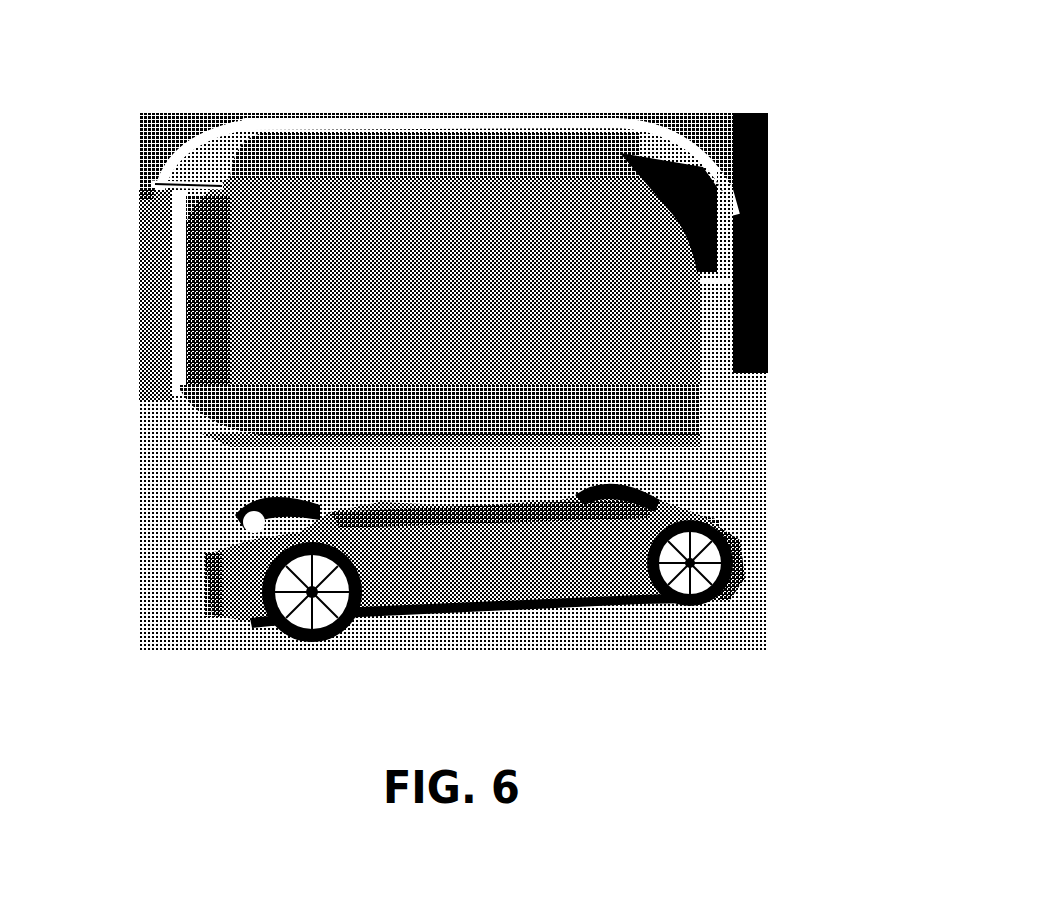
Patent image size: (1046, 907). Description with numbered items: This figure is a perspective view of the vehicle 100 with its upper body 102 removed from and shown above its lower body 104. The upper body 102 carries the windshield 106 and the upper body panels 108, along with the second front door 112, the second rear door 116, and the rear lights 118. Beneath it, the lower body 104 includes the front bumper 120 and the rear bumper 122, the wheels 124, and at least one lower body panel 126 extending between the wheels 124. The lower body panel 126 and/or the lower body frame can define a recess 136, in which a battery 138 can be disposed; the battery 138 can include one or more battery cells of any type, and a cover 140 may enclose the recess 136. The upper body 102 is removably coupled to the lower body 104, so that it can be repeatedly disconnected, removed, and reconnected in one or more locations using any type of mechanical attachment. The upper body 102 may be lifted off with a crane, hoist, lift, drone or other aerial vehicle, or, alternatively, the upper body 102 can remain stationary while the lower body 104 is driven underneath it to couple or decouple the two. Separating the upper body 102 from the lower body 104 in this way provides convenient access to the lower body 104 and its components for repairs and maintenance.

The vehicle 100 is at (207, 72).
The upper body 102 is at (337, 148).
The lower body 104 is at (380, 645).
The windshield 106 is at (643, 157).
The upper body panels 108 is at (435, 132).
The second front door 112 is at (700, 300).
The second rear door 116 is at (225, 292).
The rear lights 118 is at (160, 183).
The front bumper 120 is at (742, 525).
The rear bumper 122 is at (217, 548).
The wheels 124 is at (575, 473).
The lower body panel 126 is at (593, 613).
The recess 136 is at (467, 605).
The battery 138 is at (515, 520).
The cover 140 is at (422, 537).